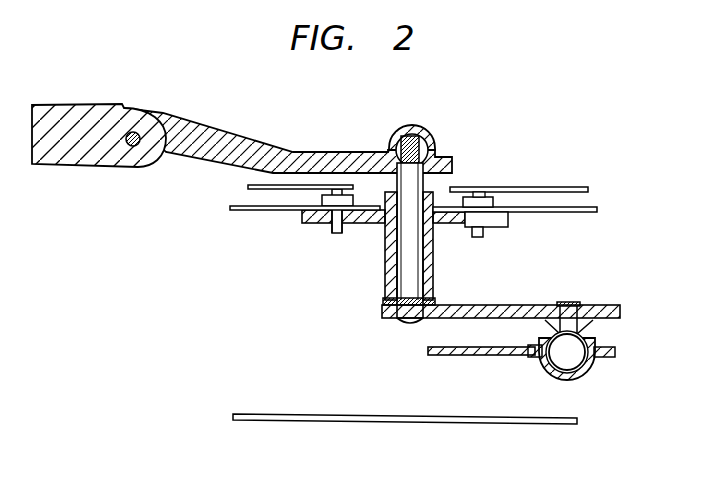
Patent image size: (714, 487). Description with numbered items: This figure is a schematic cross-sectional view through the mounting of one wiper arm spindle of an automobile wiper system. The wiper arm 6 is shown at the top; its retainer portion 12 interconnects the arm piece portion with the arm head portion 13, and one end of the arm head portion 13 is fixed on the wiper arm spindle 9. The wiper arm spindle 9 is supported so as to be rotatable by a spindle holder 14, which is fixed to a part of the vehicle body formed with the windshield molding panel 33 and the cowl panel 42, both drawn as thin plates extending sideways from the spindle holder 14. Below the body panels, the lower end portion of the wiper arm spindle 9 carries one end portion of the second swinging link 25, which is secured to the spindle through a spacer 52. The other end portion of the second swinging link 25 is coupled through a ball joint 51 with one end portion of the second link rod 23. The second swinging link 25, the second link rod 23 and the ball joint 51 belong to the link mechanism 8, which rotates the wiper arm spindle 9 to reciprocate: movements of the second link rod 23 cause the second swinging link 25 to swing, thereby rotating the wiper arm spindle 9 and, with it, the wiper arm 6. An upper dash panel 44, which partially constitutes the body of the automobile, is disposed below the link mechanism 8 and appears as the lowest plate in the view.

The wiper arm 6 is at (133, 168).
The link mechanism 8 is at (588, 398).
The wiper arm spindle 9 is at (432, 132).
The retainer portion 12 is at (92, 104).
The arm head portion 13 is at (240, 134).
The spindle holder 14 is at (362, 227).
The second link rod 23 is at (492, 355).
The second swinging link 25 is at (455, 305).
The windshield molding panel 33 is at (522, 187).
The cowl panel 42 is at (267, 212).
The upper dash panel 44 is at (515, 422).
The ball joint 51 is at (590, 375).
The spacer 52 is at (378, 300).